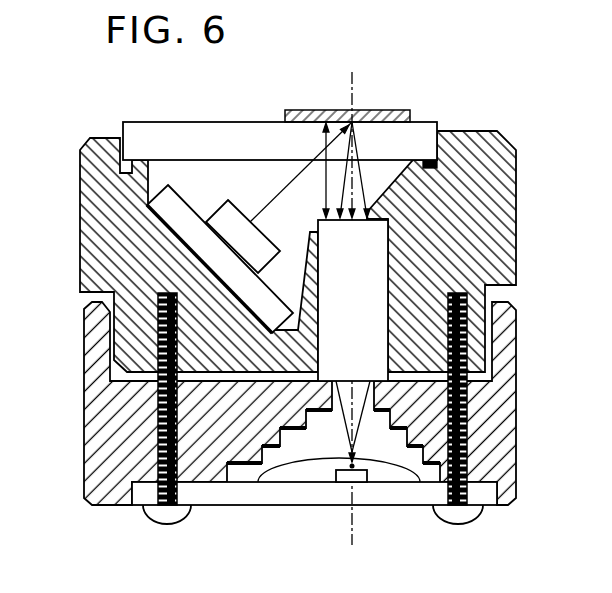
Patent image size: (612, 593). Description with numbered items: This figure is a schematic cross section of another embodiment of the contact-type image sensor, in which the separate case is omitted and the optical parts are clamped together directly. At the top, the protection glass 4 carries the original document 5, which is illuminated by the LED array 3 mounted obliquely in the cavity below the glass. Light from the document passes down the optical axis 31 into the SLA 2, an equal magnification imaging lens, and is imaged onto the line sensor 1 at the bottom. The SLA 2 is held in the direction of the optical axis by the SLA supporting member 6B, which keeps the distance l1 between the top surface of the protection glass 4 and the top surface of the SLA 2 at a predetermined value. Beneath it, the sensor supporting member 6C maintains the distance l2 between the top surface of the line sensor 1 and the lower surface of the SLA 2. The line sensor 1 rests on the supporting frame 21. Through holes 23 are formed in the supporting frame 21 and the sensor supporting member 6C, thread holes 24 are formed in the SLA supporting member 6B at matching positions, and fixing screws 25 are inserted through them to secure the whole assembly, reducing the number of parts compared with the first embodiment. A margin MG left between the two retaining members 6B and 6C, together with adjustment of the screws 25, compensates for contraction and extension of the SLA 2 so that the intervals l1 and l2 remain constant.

The line sensor 1 is at (344, 484).
The SLA 2 is at (390, 248).
The LED array 3 is at (208, 215).
The protection glass 4 is at (242, 130).
The original document 5 is at (403, 110).
The SLA supporting member 6B is at (500, 148).
The sensor supporting member 6C is at (507, 415).
The supporting frame 21 is at (240, 498).
The through holes 23 is at (150, 425).
The thread holes 24 is at (157, 330).
The fixing screws 25 is at (181, 524).
The optical axis 31 is at (357, 89).
The margin MG is at (486, 374).
The distance l1 is at (327, 168).
The distance l2 is at (347, 420).